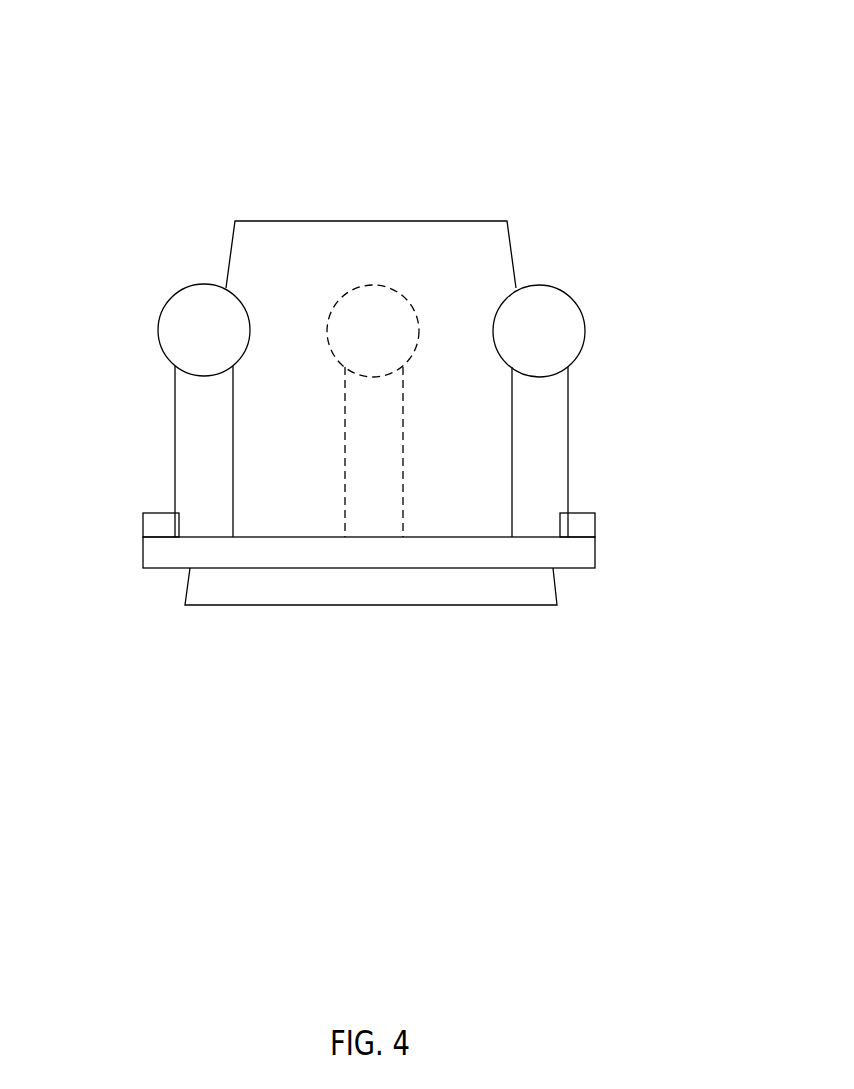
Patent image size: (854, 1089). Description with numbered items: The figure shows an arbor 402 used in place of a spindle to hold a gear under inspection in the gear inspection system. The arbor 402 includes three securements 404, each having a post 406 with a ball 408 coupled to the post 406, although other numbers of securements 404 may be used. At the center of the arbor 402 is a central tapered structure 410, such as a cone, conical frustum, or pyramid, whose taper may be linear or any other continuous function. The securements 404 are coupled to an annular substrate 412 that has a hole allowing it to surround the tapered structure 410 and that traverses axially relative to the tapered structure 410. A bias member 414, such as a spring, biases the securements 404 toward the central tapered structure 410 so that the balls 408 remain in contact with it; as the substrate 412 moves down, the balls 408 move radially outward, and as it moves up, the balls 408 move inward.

The arbor 402 is at (486, 97).
The securement 404 is at (438, 373).
The post 406 is at (185, 443).
The ball 408 is at (203, 298).
The central tapered structure 410 is at (398, 235).
The annular substrate 412 is at (568, 556).
The bias member 414 is at (152, 523).